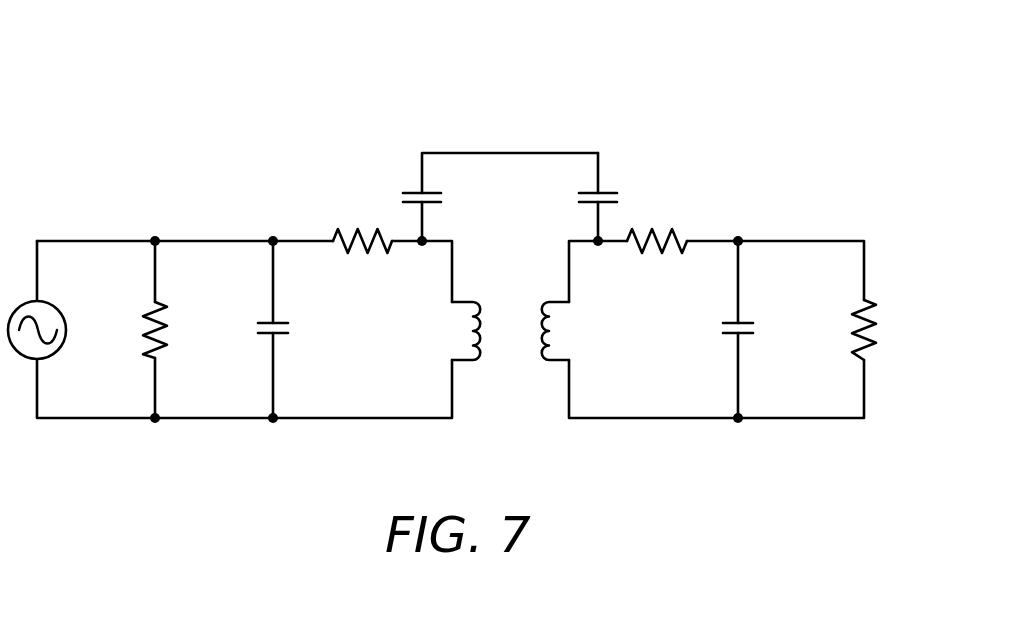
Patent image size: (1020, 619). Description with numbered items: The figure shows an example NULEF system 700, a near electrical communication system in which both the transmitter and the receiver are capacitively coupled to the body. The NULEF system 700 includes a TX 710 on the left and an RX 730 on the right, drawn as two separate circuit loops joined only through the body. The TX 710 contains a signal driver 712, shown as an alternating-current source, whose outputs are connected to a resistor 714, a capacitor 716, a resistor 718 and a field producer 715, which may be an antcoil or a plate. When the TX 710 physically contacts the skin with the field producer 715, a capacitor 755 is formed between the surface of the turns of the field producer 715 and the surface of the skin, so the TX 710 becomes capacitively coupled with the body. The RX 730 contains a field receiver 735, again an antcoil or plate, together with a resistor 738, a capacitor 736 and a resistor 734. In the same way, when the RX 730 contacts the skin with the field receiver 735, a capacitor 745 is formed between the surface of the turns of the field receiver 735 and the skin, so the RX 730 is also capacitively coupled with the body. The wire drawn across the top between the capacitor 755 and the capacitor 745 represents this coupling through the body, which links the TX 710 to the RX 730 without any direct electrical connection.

The NULEF system 700 is at (124, 57).
The TX 710 is at (132, 158).
The signal driver 712 is at (52, 303).
The resistor 714 is at (160, 316).
The field producer 715 is at (470, 340).
The capacitor 716 is at (285, 322).
The resistor 718 is at (350, 238).
The RX 730 is at (832, 156).
The resistor 734 is at (858, 340).
The field receiver 735 is at (542, 340).
The capacitor 736 is at (750, 322).
The resistor 738 is at (672, 238).
The capacitor 745 is at (609, 192).
The capacitor 755 is at (413, 192).